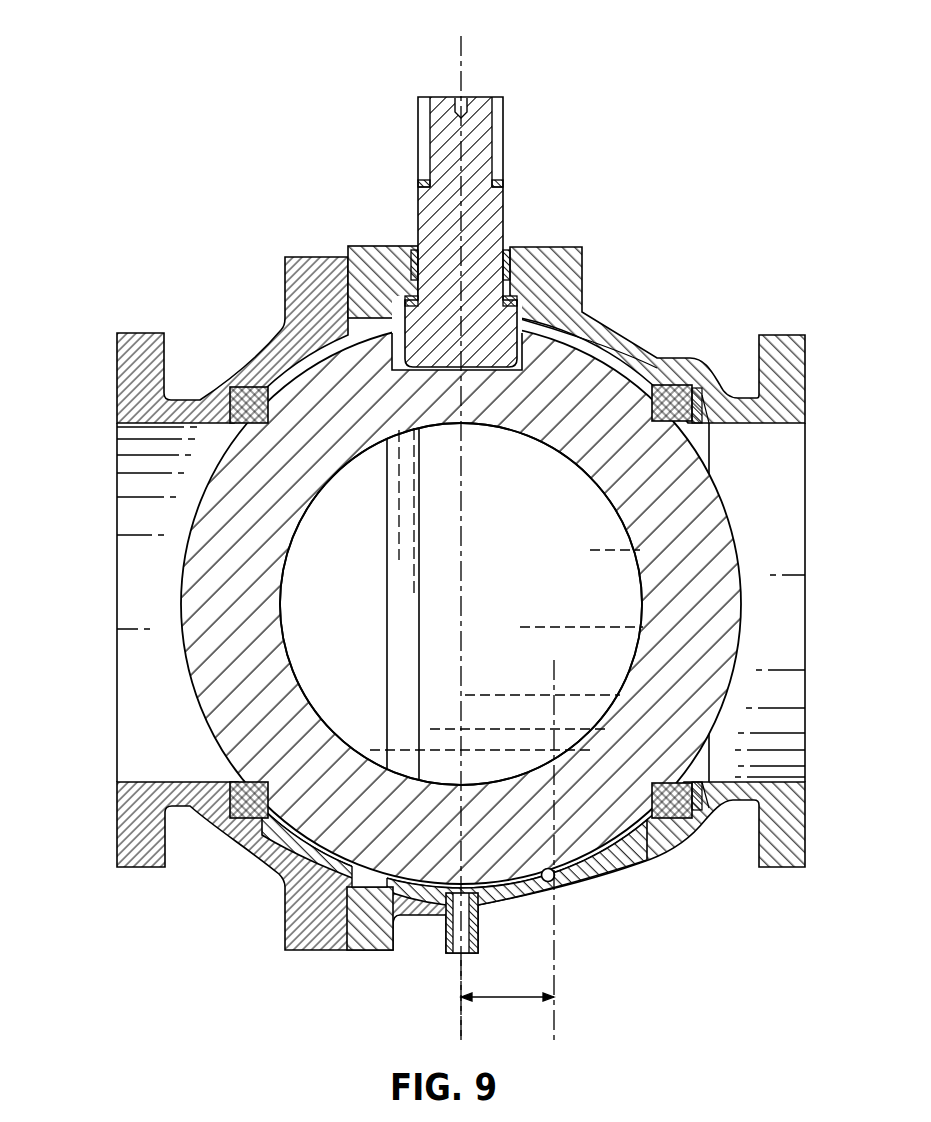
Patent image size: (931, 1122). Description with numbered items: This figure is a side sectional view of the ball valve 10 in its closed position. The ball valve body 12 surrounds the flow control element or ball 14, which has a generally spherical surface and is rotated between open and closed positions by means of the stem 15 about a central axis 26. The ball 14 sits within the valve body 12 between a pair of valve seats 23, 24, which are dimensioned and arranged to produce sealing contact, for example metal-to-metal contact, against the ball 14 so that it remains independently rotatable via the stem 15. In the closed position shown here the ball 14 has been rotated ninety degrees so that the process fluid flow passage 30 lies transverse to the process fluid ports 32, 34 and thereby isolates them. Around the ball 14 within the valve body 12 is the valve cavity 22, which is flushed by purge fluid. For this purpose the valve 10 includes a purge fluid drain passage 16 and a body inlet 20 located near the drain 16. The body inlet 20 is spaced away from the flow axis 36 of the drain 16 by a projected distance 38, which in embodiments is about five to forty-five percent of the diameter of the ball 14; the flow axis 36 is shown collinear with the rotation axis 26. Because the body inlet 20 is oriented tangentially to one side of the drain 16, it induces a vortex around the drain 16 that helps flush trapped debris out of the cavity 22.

The ball valve 10 is at (725, 60).
The ball valve body 12 is at (630, 862).
The ball 14 is at (634, 448).
The stem 15 is at (503, 205).
The purge fluid drain passage 16 is at (445, 947).
The body inlet 20 is at (556, 878).
The valve cavity 22 is at (288, 830).
The valve seat 23 is at (248, 388).
The valve seat 24 is at (675, 385).
The central axis 26 is at (463, 78).
The process fluid flow passage 30 is at (608, 498).
The process fluid port 32 is at (805, 605).
The process fluid port 34 is at (117, 605).
The flow axis 36 is at (461, 1003).
The projected distance 38 is at (513, 1000).